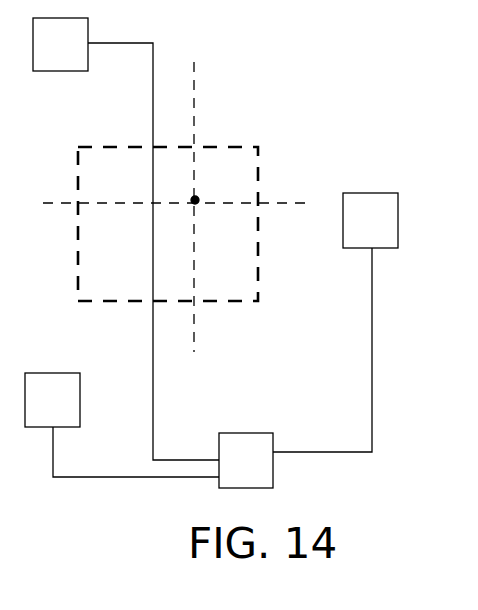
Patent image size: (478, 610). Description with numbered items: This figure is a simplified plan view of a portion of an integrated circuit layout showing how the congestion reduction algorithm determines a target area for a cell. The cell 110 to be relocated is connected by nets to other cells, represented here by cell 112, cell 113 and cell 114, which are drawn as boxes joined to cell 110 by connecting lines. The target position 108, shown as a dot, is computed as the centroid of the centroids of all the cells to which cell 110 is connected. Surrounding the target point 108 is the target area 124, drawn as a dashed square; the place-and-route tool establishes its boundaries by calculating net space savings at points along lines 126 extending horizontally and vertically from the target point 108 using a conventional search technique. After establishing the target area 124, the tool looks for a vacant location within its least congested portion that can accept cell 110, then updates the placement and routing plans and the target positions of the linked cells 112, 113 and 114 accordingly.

The target position 108 is at (197, 195).
The cell 110 is at (227, 471).
The cell 112 is at (351, 232).
The cell 113 is at (33, 411).
The cell 114 is at (41, 56).
The target area 124 is at (80, 240).
The cross-hair axis lines 126 is at (290, 206).